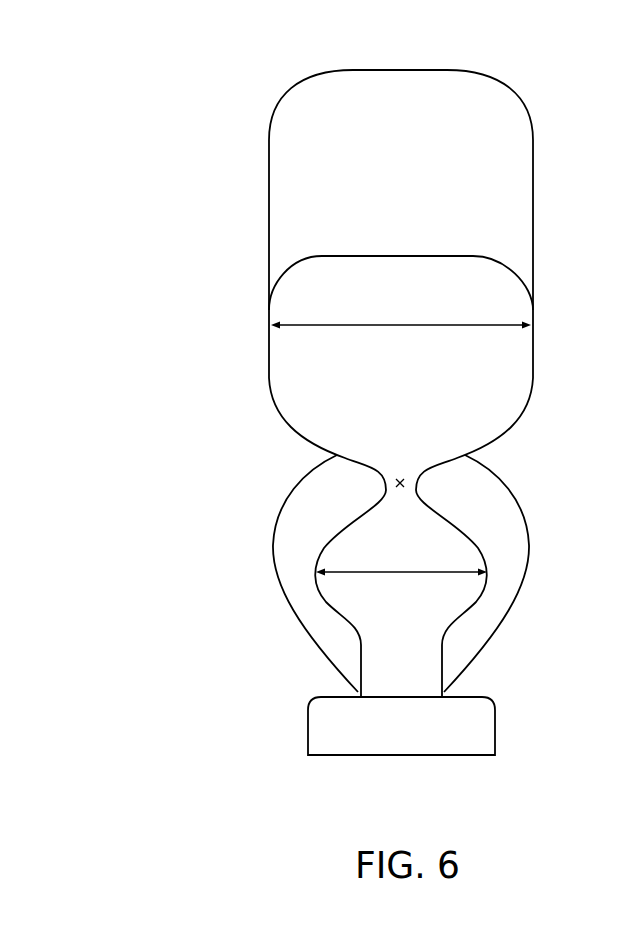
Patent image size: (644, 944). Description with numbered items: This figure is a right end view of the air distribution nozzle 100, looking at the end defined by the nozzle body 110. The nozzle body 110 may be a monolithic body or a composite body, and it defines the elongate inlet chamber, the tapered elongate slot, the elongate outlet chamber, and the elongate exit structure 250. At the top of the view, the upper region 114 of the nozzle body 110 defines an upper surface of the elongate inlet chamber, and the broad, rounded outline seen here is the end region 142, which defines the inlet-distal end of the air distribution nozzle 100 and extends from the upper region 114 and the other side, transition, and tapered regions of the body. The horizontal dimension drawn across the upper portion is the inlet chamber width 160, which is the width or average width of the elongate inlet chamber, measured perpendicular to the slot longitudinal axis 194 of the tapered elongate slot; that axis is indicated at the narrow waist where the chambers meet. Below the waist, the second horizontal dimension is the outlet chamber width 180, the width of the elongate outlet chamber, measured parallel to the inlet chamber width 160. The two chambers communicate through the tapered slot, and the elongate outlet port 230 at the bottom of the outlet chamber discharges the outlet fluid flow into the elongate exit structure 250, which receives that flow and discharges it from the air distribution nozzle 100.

The air distribution nozzle 100 is at (402, 396).
The nozzle body 110 is at (368, 367).
The upper region 114 is at (398, 67).
The end region 142 is at (459, 354).
The inlet chamber width 160 is at (388, 323).
The slot longitudinal axis 194 is at (401, 477).
The outlet chamber width 180 is at (405, 574).
The elongate outlet port 230 is at (367, 687).
The elongate exit structure 250 is at (301, 735).